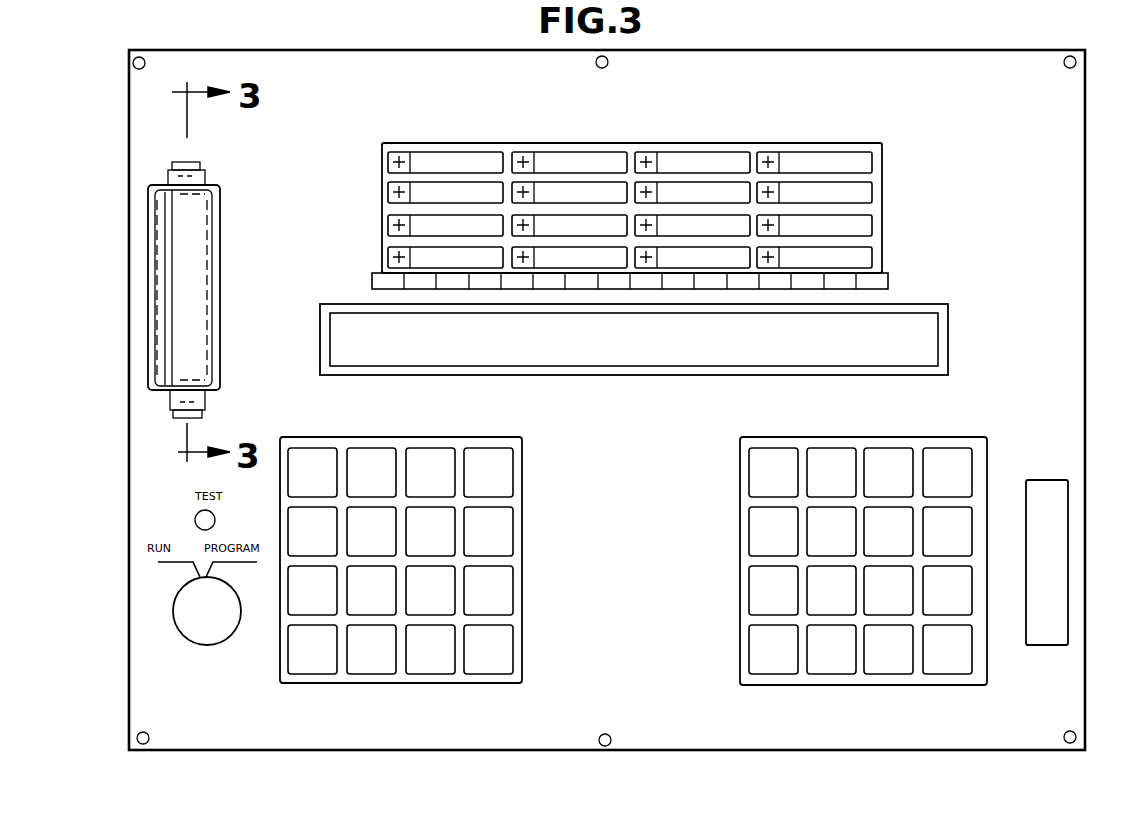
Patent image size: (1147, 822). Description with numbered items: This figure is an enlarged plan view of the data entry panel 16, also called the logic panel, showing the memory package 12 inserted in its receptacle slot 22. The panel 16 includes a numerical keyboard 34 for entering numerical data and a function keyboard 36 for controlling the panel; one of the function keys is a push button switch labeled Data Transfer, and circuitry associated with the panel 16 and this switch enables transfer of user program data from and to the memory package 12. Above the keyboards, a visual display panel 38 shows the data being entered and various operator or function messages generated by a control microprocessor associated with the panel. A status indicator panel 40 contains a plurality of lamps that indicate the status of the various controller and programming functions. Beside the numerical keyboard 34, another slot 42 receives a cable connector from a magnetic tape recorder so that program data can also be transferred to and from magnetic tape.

The memory package 12 is at (197, 273).
The data entry panel 16 is at (1065, 203).
The slot 22 is at (207, 185).
The numerical keyboard 34 is at (850, 445).
The function keyboard 36 is at (407, 435).
The visual display panel 38 is at (920, 341).
The status indicator panel 40 is at (875, 177).
The slot 42 is at (1052, 532).